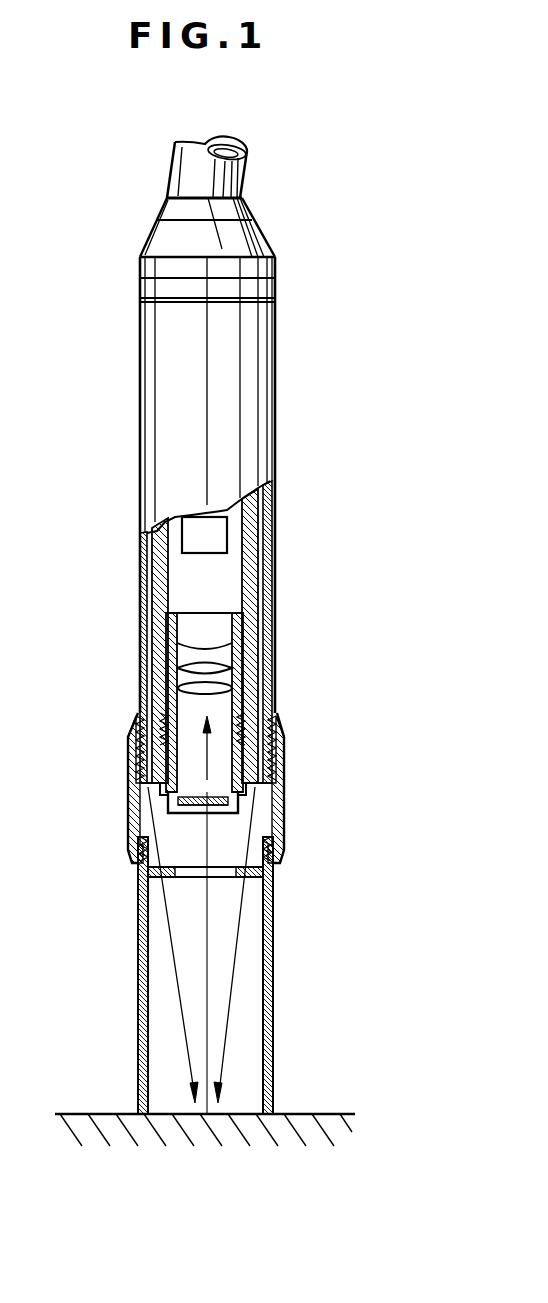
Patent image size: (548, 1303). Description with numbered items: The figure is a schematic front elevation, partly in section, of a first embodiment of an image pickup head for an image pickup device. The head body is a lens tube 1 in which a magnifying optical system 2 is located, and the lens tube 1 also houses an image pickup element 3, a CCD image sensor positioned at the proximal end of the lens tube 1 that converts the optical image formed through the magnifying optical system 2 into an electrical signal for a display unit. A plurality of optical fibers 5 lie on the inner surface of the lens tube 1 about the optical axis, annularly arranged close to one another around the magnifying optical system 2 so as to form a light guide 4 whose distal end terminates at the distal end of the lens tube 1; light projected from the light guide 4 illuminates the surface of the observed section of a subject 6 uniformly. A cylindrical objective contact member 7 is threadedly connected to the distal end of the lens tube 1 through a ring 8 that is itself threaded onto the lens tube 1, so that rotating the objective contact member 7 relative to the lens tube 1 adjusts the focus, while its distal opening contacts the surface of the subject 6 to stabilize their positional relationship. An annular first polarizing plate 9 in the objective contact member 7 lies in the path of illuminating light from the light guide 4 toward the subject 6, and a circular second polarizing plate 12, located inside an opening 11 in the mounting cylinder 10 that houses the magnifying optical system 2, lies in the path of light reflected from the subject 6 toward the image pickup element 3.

The lens tube 1 is at (140, 481).
The magnifying optical system 2 is at (177, 656).
The image pickup element 3 is at (220, 534).
The light guide 4 is at (260, 678).
The optical fibers 5 is at (140, 621).
The subject 6 is at (97, 1114).
The objective contact member 7 is at (138, 986).
The ring 8 is at (128, 806).
The first polarizing plate 9 is at (268, 882).
The mounting cylinder 10 is at (283, 750).
The opening 11 is at (203, 820).
The second polarizing plate 12 is at (240, 799).